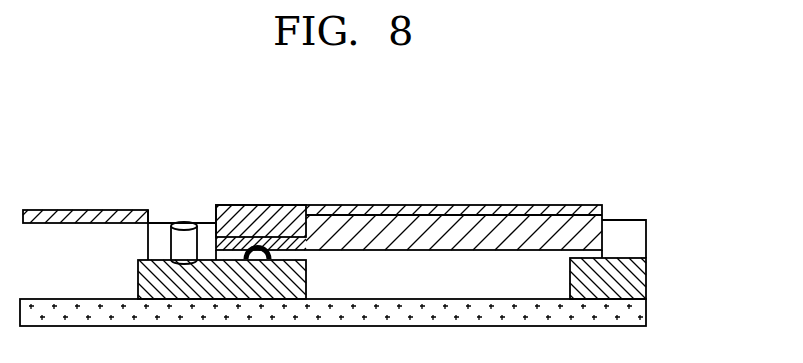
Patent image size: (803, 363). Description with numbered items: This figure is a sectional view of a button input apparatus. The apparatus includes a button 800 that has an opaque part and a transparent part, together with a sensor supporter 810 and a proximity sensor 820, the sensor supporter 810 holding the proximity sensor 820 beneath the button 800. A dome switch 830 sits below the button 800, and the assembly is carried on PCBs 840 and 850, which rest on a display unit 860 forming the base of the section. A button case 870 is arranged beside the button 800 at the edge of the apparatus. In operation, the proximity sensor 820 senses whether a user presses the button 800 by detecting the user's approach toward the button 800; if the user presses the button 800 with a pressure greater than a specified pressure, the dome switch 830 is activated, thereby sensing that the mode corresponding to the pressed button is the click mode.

The button 800 is at (587, 231).
The sensor supporter 810 is at (160, 240).
The proximity sensor 820 is at (185, 222).
The dome switch 830 is at (257, 246).
The PCB 840 is at (643, 278).
The PCB 850 is at (140, 278).
The display unit 860 is at (640, 314).
The button case 870 is at (83, 210).